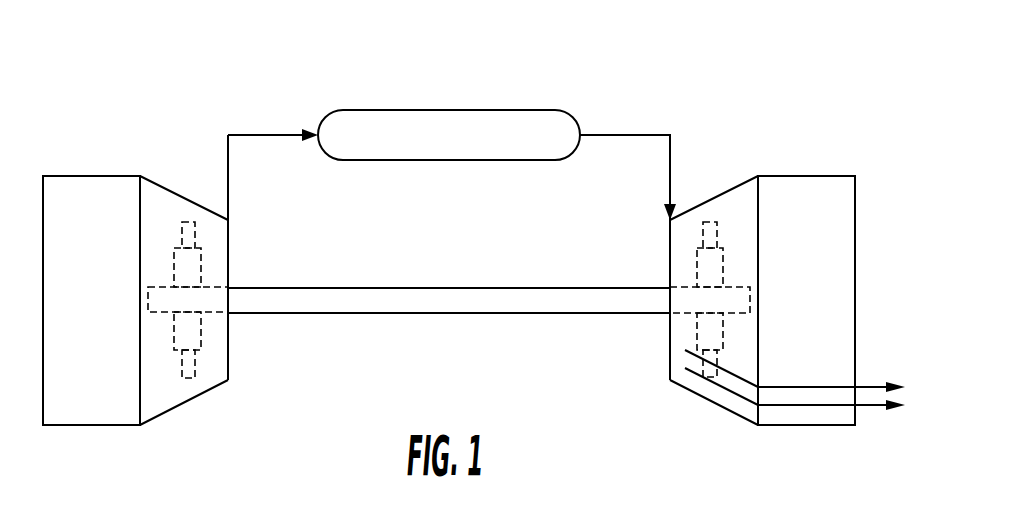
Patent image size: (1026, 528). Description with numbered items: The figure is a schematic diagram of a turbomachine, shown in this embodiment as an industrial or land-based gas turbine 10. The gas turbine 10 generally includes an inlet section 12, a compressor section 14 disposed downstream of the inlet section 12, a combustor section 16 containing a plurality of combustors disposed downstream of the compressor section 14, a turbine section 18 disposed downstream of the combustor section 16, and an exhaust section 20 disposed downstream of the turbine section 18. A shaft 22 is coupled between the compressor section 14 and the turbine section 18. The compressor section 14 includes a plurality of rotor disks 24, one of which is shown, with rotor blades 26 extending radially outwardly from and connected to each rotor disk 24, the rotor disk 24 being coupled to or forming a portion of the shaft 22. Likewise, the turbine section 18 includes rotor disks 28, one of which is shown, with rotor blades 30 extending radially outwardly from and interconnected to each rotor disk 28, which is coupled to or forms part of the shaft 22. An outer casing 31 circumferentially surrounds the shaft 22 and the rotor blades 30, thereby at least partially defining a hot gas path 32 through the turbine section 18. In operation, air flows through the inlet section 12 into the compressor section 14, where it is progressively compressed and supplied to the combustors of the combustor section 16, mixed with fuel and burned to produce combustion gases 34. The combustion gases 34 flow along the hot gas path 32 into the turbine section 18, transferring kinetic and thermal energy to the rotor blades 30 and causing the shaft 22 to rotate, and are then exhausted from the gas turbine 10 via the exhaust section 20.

The gas turbine 10 is at (260, 50).
The inlet section 12 is at (72, 176).
The compressor section 14 is at (177, 195).
The combustor section 16 is at (518, 110).
The turbine section 18 is at (742, 178).
The exhaust section 20 is at (818, 176).
The shaft 22 is at (385, 313).
The rotor disk 24 is at (172, 263).
The rotor blade 26 is at (180, 233).
The rotor disk 28 is at (697, 270).
The rotor blade 30 is at (712, 222).
The outer casing 31 is at (750, 427).
The hot gas path 32 is at (714, 406).
The combustion gases 34 is at (635, 137).